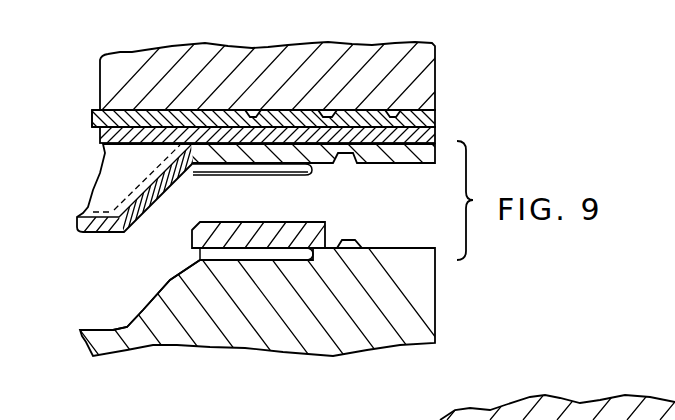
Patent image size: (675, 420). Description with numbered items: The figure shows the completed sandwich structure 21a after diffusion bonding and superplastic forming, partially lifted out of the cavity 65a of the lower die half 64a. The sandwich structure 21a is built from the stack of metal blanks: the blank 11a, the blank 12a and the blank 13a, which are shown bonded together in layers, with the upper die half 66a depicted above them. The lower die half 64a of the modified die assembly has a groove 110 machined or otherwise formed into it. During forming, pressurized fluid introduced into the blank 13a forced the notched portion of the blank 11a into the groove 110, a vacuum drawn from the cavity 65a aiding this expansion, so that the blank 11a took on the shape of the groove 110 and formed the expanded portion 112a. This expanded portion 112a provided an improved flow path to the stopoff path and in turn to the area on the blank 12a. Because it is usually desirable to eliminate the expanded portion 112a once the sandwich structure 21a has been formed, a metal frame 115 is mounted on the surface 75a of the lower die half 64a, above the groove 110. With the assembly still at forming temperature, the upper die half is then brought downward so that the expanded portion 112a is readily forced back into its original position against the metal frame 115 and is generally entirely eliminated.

The upper die half 66a is at (435, 63).
The blank 13a is at (435, 112).
The blank 12a is at (435, 131).
The sandwich structure 21a is at (92, 115).
The blank 11a is at (435, 150).
The expanded portion 112a is at (291, 175).
The metal frame 115 is at (323, 225).
The groove 110 is at (257, 252).
The lower die half 64a is at (258, 288).
The surface 75a is at (413, 247).
The cavity 65a is at (140, 295).